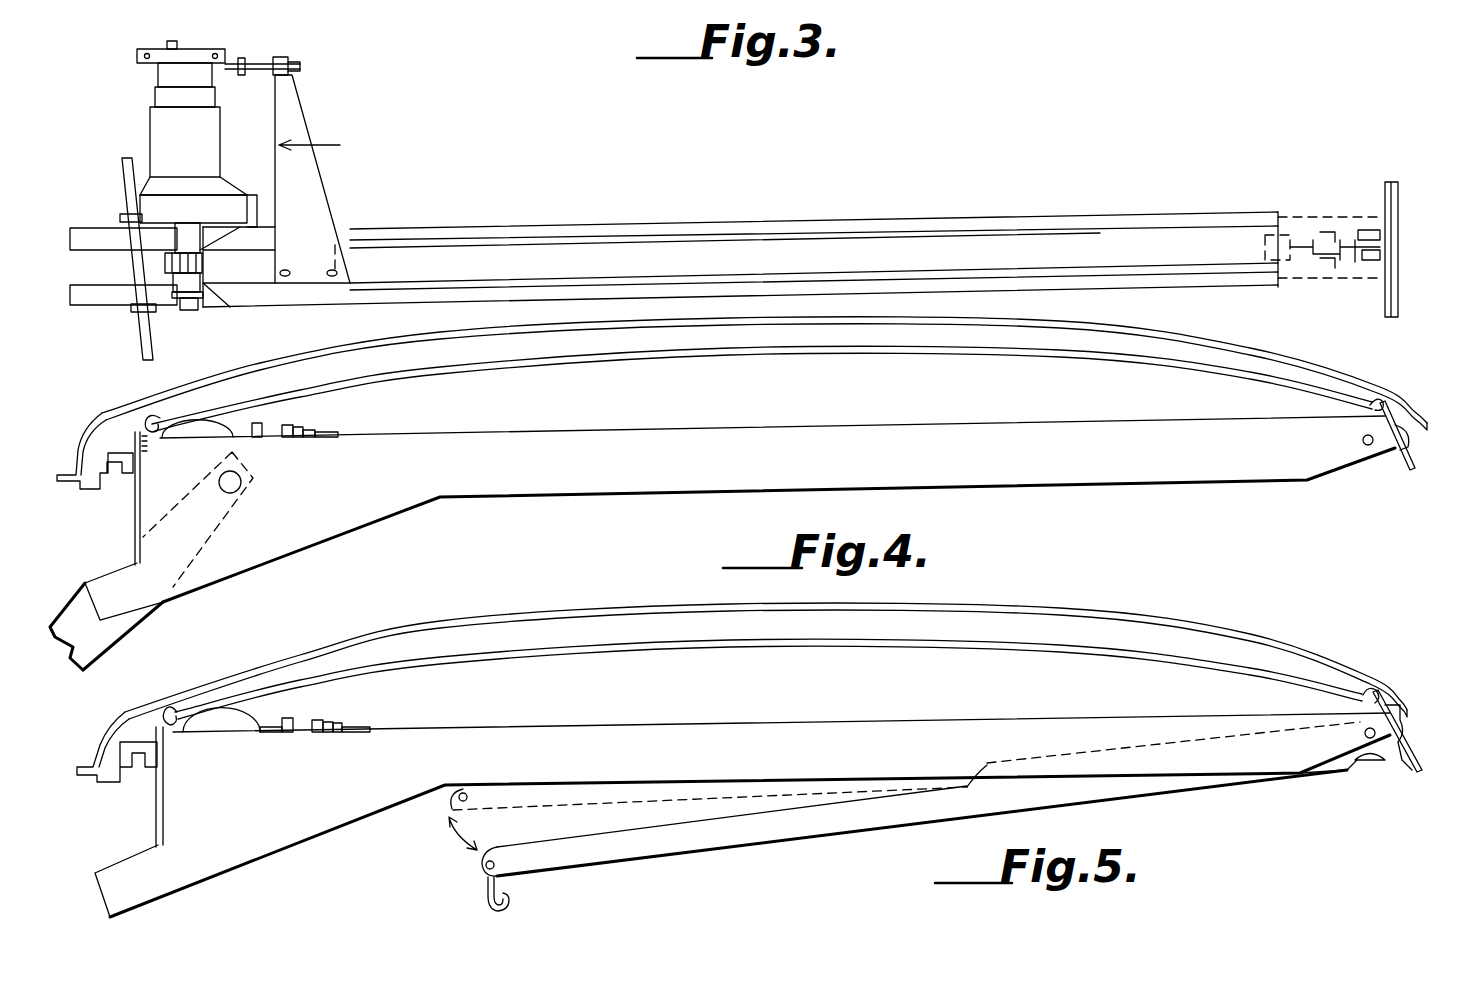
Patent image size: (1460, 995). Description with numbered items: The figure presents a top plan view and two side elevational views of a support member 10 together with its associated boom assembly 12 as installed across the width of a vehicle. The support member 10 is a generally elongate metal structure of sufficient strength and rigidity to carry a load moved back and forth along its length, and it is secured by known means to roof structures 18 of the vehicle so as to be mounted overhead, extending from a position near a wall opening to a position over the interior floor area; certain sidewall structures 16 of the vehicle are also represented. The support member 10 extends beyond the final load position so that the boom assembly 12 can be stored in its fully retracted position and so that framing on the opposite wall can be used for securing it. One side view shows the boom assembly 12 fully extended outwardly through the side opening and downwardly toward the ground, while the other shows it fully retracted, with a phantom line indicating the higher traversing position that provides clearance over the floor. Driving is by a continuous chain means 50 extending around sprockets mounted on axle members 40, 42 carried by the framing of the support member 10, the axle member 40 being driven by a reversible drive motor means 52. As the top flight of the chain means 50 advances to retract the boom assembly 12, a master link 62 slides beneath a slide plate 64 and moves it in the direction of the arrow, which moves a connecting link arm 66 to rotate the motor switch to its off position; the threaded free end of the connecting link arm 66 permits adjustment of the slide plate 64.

In FIG. 3, the support member 10 is at (772, 192).
In FIG. 4, the support member 10 is at (785, 412).
In FIG. 5, the support member 10 is at (730, 737).
In FIG. 4, the boom assembly 12 is at (95, 655).
In FIG. 5, the boom assembly 12 is at (638, 851).
In FIG. 3, the sidewall structures 16 is at (143, 338).
In FIG. 4, the sidewall structures 16 is at (135, 425).
In FIG. 5, the sidewall structures 16 is at (155, 727).
In FIG. 4, the roof structures 18 is at (277, 359).
In FIG. 5, the roof structures 18 is at (313, 642).
In FIG. 3, the axle member 40 is at (197, 313).
In FIG. 3, the axle member 42 is at (1368, 230).
In FIG. 3, the continuous chain means 50 is at (199, 250).
In FIG. 3, the reversible drive motor means 52 is at (200, 147).
In FIG. 3, the master link 62 is at (1327, 238).
In FIG. 3, the slide plate 64 is at (312, 189).
In FIG. 3, the connecting link arm 66 is at (262, 75).